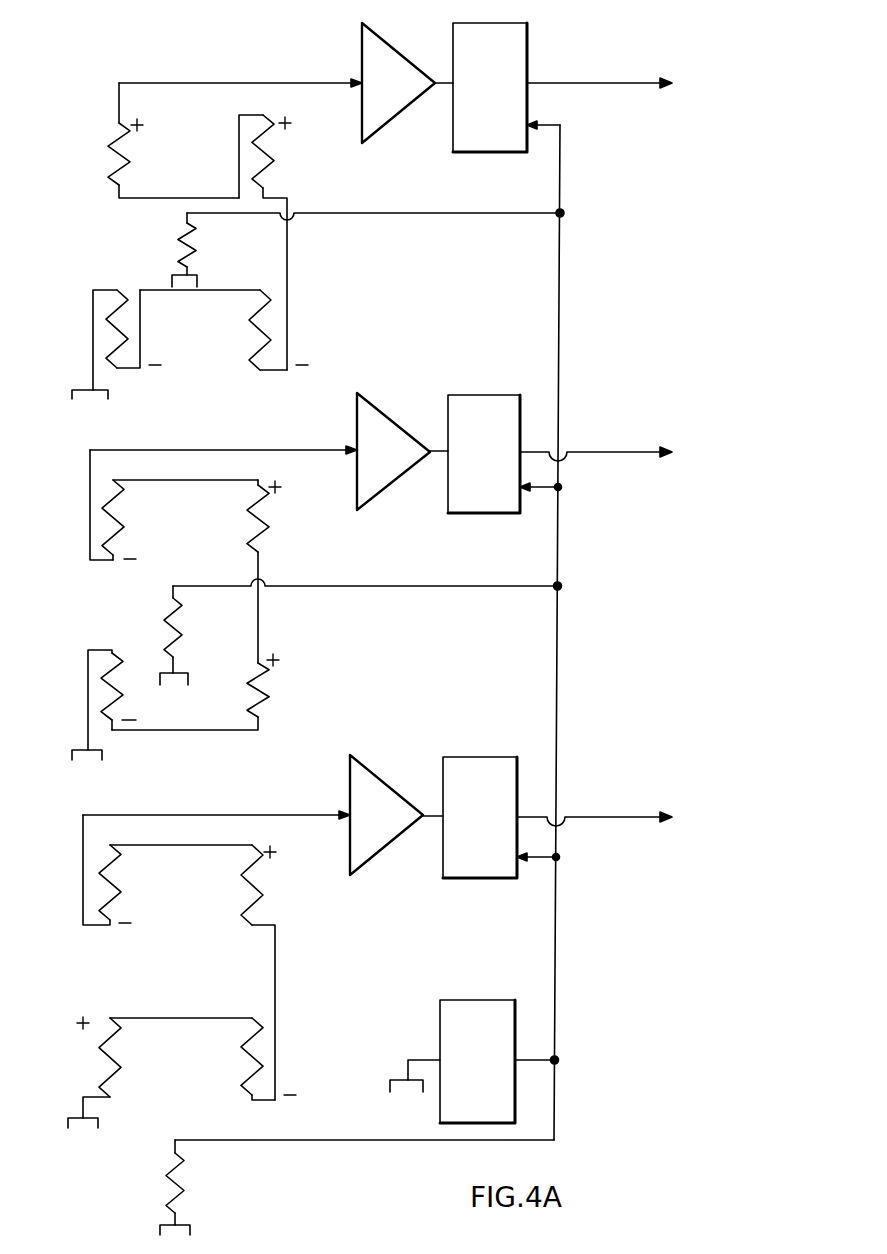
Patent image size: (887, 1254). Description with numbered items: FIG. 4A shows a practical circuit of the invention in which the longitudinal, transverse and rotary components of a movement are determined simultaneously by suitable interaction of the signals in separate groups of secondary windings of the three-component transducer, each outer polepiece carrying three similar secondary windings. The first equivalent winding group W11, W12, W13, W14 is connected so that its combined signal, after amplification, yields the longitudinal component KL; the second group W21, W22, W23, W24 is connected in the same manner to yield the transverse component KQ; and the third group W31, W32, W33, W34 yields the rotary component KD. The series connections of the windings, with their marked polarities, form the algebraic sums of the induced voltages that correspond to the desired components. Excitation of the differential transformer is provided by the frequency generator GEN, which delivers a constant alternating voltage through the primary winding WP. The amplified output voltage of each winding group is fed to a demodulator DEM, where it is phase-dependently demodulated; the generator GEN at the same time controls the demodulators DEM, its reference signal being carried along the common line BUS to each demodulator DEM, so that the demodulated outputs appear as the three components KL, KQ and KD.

The secondary winding W11 is at (154, 140).
The secondary winding W12 is at (283, 242).
The secondary winding W13 is at (237, 330).
The secondary winding W14 is at (104, 344).
The secondary winding W21 is at (155, 505).
The secondary winding W22 is at (285, 571).
The secondary winding W23 is at (216, 692).
The secondary winding W24 is at (91, 705).
The secondary winding W31 is at (146, 870).
The secondary winding W32 is at (276, 972).
The secondary winding W33 is at (215, 1059).
The secondary winding W34 is at (81, 1072).
The primary winding WP is at (211, 724).
The longitudinal component KL is at (599, 68).
The transverse component KQ is at (596, 442).
The rotary component KD is at (594, 807).
The demodulator DEM is at (438, 450).
The frequency generator GEN is at (472, 1061).
The reference signal bus BUS is at (540, 630).